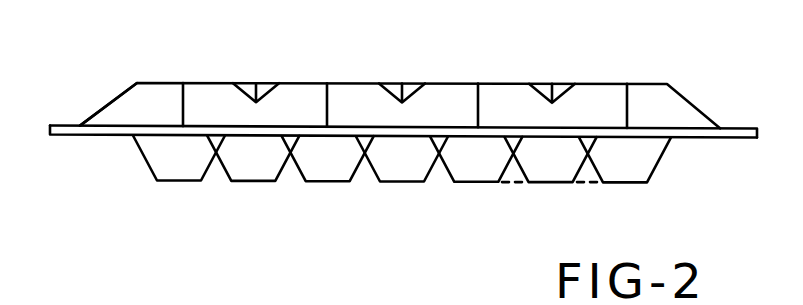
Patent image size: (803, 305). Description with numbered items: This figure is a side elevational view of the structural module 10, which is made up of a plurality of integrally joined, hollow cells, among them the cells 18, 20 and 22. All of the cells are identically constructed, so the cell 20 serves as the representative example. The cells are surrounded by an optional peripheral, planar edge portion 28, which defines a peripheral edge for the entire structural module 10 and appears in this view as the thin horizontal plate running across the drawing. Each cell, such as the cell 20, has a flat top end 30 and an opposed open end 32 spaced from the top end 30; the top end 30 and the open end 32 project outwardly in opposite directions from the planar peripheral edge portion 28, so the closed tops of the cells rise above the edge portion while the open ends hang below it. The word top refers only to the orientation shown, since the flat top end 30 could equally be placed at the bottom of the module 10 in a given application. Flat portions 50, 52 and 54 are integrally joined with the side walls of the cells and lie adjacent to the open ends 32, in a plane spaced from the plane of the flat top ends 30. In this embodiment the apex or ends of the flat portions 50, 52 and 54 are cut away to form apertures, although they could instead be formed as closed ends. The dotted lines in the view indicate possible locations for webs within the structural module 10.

The structural module 10 is at (605, 64).
The cell 18 is at (130, 74).
The cell 20 is at (287, 70).
The cell 22 is at (497, 78).
The peripheral planar edge portion 28 is at (722, 127).
The flat top end 30 is at (342, 97).
The open end 32 is at (337, 139).
The flat portion 50 is at (248, 182).
The flat portion 52 is at (413, 183).
The flat portion 54 is at (325, 183).